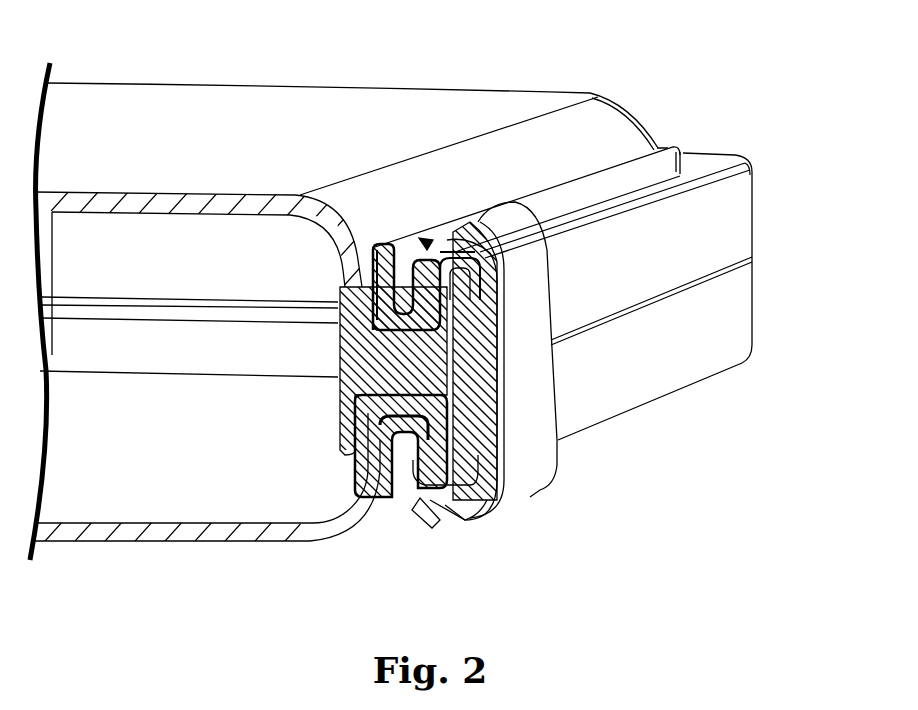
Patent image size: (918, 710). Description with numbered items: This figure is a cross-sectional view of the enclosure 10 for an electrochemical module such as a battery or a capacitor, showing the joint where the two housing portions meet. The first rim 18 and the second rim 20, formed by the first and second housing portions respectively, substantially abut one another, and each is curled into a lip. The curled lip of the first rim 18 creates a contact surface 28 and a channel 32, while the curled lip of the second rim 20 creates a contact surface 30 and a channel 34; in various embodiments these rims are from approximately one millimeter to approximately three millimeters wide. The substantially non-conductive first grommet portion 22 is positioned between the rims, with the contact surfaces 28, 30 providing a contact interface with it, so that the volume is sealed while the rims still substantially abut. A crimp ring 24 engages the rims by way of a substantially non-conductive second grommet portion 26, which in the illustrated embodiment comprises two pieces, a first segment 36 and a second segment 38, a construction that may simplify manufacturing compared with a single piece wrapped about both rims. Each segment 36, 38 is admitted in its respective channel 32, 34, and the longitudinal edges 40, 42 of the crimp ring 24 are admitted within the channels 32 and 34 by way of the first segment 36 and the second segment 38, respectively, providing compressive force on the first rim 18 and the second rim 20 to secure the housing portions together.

The enclosure 10 is at (683, 98).
The first rim 18 is at (455, 235).
The second rim 20 is at (355, 470).
The first grommet portion 22 is at (340, 365).
The crimp ring 24 is at (455, 272).
The second grommet portion 26 is at (445, 248).
The contact surface 28 is at (381, 270).
The contact surface 30 is at (395, 410).
The channel 32 is at (372, 250).
The channel 34 is at (457, 480).
The first segment 36 is at (455, 232).
The second segment 38 is at (480, 475).
The longitudinal edge 40 is at (430, 247).
The longitudinal edge 42 is at (422, 510).